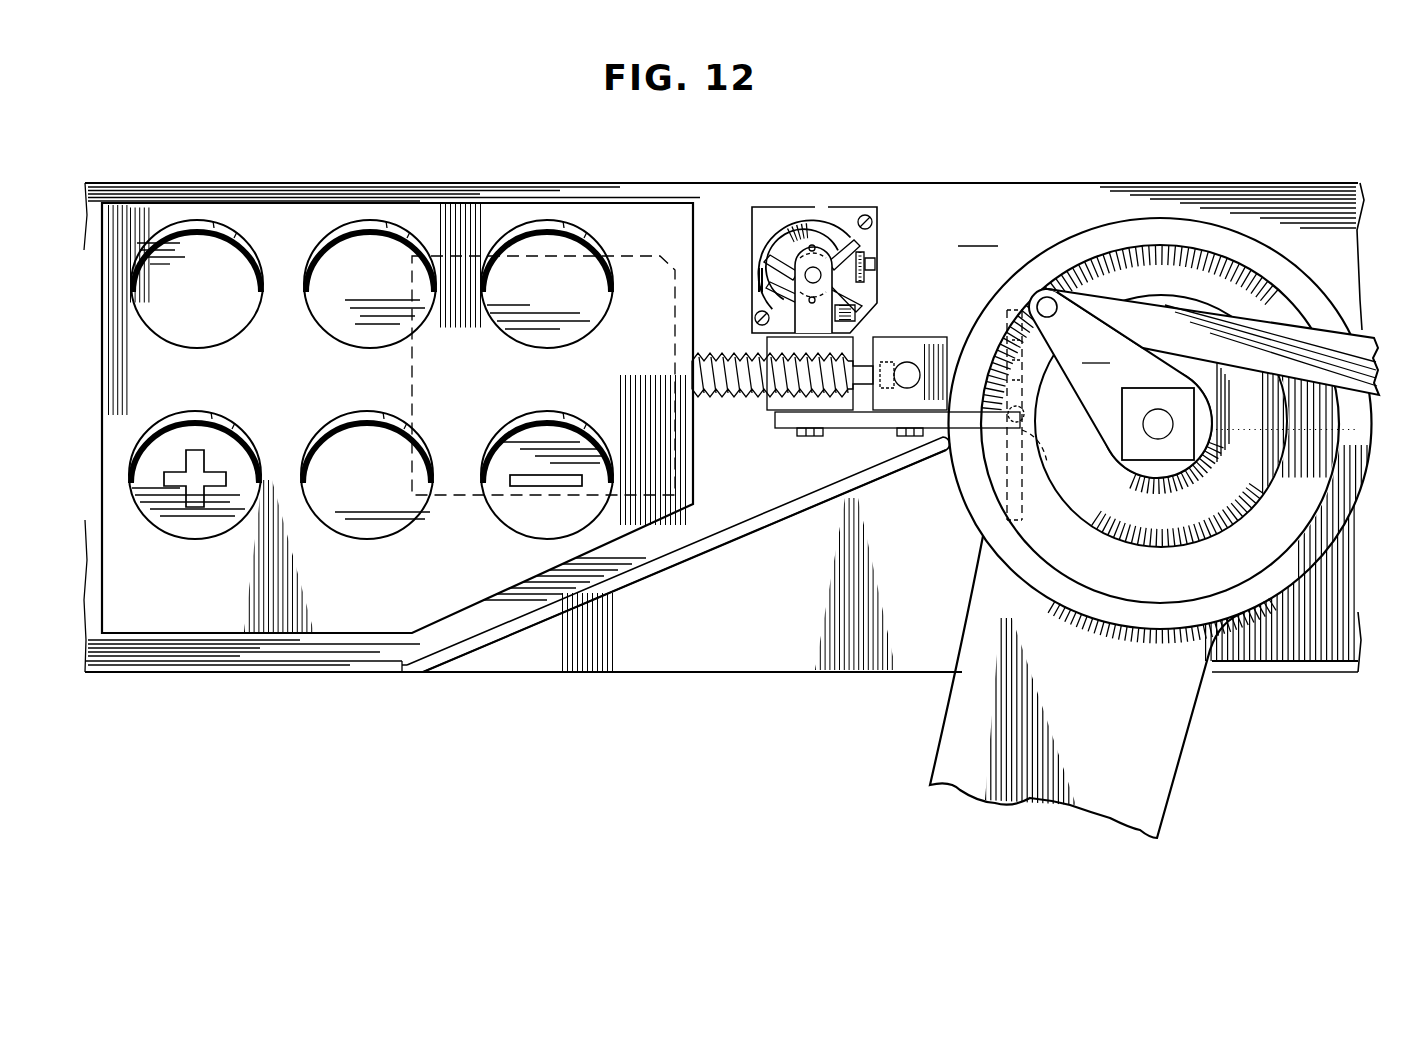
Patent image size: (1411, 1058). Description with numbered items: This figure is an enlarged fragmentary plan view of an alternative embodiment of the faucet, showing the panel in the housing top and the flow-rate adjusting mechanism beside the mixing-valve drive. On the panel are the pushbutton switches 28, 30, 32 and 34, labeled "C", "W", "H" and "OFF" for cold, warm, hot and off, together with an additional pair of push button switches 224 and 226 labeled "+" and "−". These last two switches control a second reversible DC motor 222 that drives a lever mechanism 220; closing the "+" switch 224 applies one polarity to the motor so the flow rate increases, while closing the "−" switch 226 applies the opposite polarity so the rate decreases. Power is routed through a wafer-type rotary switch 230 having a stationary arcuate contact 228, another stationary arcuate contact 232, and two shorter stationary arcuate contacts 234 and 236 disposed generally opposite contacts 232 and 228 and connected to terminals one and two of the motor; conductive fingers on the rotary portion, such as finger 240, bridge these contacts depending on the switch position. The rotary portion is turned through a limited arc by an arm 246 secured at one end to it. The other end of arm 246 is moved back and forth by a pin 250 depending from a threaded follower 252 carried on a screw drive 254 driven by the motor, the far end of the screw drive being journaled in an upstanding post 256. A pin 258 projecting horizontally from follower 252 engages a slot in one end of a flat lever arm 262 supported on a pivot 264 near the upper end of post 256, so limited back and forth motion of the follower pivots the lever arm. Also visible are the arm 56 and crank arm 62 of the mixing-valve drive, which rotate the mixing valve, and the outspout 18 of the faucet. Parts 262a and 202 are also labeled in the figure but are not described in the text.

The pushbutton switch 28 is at (186, 226).
The pushbutton switch 30 is at (372, 226).
The pushbutton switch 32 is at (545, 227).
The push button switch 224 is at (230, 415).
The pushbutton switch 34 is at (355, 521).
The push button switch 226 is at (580, 426).
The second reversible DC motor 222 is at (462, 500).
The wafer-type rotary switch 230 is at (820, 230).
The stationary arcuate contact 228 is at (805, 225).
The stationary arcuate contact 232 is at (757, 262).
The stationary arcuate contact 234 is at (868, 262).
The stationary arcuate contact 236 is at (852, 300).
The conductive finger 240 is at (770, 290).
The arm 246 is at (790, 303).
The pin 250 is at (782, 374).
The screw drive 254 is at (748, 396).
The threaded follower 252 is at (778, 407).
The upstanding post 256 is at (905, 350).
The pin 258 is at (807, 440).
The flat lever arm 262 is at (860, 420).
The pivot 264 is at (906, 440).
The pivot pin 262a is at (1024, 430).
The hidden shaft 202 is at (1015, 505).
The lever mechanism 220 is at (1161, 427).
The crank arm 62 is at (1120, 383).
The arm 56 is at (1370, 340).
The outspout 18 is at (950, 762).